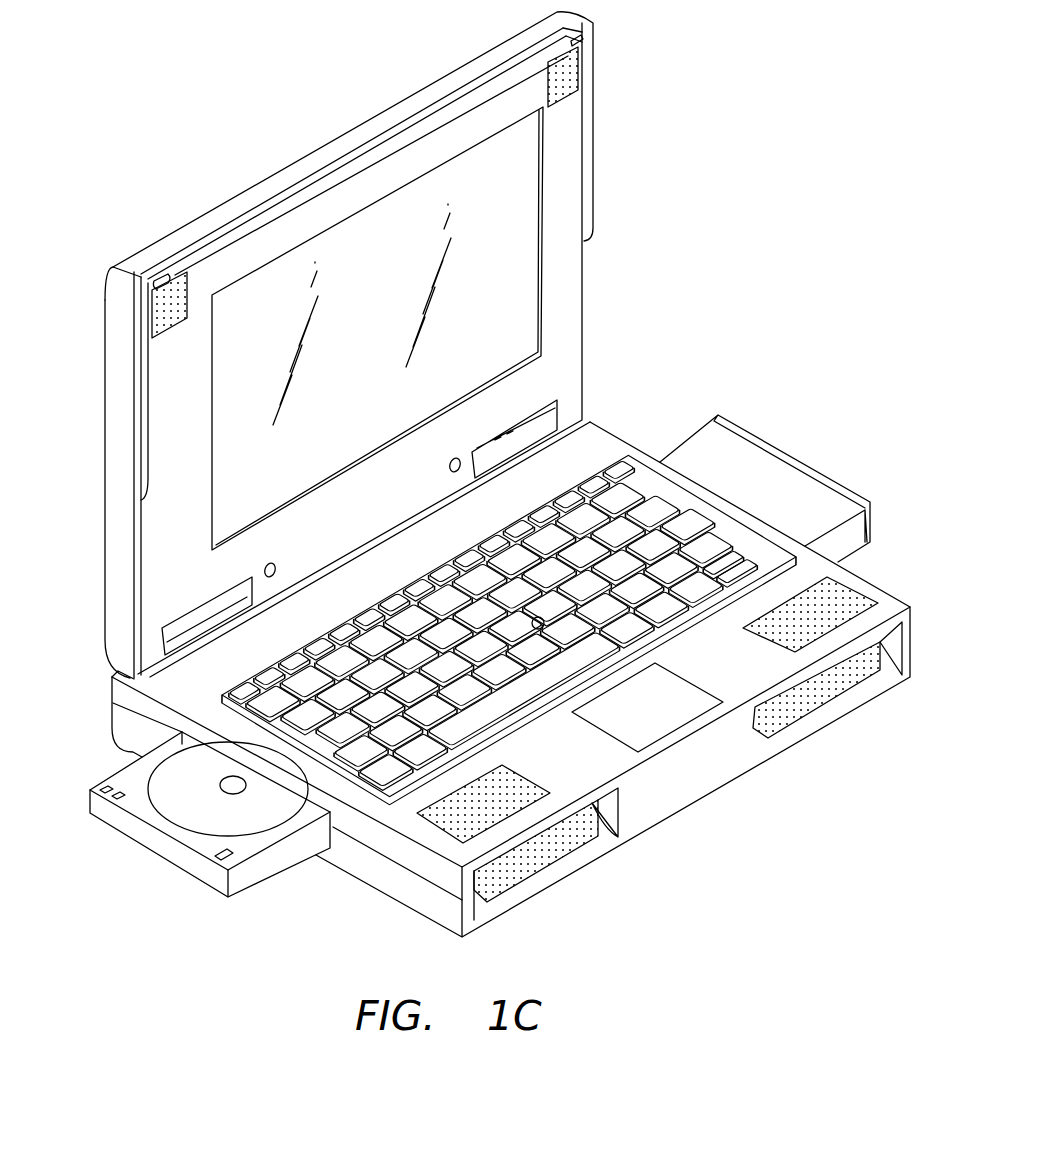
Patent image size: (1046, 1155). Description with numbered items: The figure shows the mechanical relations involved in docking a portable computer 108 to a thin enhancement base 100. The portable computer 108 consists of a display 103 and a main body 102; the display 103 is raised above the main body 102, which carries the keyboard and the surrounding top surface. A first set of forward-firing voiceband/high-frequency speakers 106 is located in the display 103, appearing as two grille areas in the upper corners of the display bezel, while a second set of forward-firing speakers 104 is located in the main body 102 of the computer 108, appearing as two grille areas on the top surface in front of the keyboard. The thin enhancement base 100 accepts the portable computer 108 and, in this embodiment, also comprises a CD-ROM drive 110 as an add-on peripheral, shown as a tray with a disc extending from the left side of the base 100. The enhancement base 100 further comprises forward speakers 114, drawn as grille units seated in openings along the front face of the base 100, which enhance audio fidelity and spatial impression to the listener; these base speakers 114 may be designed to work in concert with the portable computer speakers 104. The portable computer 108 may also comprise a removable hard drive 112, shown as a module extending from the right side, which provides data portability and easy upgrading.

The thin enhancement base 100 is at (702, 799).
The main body 102 is at (616, 437).
The display 103 is at (582, 294).
The forward-firing speakers 104 is at (505, 787).
The forward-firing voiceband/high-frequency speakers 106 is at (572, 77).
The portable computer 108 is at (750, 177).
The CD-ROM drive 110 is at (162, 845).
The removable hard drive 112 is at (820, 468).
The forward speakers 114 is at (538, 857).